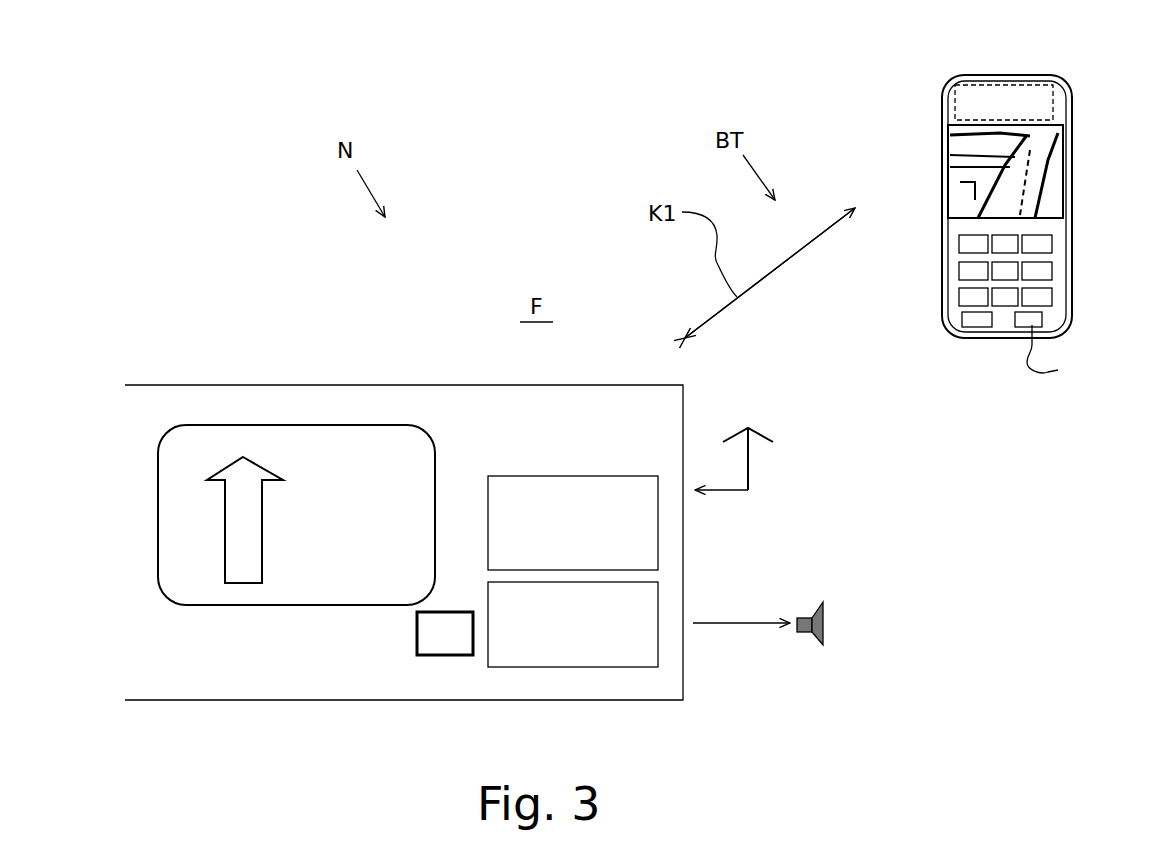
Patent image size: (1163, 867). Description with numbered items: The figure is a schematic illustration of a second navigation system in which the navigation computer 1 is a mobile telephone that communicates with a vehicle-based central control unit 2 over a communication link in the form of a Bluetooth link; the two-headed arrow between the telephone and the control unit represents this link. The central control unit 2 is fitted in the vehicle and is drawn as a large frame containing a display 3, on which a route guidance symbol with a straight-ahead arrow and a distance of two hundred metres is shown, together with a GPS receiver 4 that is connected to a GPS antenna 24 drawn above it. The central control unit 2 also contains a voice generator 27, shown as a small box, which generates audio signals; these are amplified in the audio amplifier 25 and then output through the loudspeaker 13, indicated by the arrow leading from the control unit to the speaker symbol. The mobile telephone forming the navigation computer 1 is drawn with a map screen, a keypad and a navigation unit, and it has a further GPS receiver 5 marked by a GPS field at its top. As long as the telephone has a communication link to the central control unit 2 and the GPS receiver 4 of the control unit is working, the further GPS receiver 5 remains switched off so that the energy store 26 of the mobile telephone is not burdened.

The navigation computer 1 is at (1005, 249).
The vehicle-based central control unit 2 is at (683, 648).
The display 3 is at (330, 425).
The GPS receiver 4 is at (625, 520).
The further GPS receiver 5 is at (1040, 99).
The loudspeaker 13 is at (827, 643).
The GPS antenna 24 is at (750, 463).
The audio amplifier 25 is at (626, 602).
The energy store 26 is at (975, 320).
The voice generator 27 is at (453, 612).